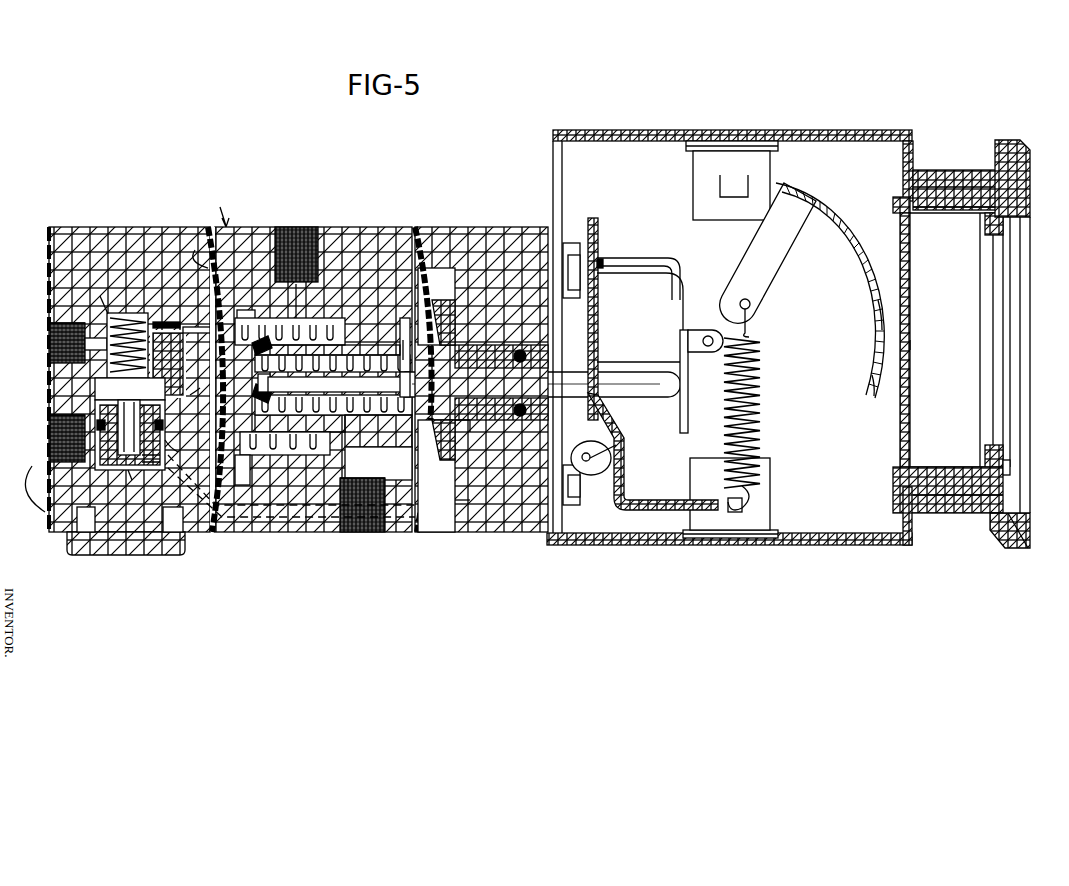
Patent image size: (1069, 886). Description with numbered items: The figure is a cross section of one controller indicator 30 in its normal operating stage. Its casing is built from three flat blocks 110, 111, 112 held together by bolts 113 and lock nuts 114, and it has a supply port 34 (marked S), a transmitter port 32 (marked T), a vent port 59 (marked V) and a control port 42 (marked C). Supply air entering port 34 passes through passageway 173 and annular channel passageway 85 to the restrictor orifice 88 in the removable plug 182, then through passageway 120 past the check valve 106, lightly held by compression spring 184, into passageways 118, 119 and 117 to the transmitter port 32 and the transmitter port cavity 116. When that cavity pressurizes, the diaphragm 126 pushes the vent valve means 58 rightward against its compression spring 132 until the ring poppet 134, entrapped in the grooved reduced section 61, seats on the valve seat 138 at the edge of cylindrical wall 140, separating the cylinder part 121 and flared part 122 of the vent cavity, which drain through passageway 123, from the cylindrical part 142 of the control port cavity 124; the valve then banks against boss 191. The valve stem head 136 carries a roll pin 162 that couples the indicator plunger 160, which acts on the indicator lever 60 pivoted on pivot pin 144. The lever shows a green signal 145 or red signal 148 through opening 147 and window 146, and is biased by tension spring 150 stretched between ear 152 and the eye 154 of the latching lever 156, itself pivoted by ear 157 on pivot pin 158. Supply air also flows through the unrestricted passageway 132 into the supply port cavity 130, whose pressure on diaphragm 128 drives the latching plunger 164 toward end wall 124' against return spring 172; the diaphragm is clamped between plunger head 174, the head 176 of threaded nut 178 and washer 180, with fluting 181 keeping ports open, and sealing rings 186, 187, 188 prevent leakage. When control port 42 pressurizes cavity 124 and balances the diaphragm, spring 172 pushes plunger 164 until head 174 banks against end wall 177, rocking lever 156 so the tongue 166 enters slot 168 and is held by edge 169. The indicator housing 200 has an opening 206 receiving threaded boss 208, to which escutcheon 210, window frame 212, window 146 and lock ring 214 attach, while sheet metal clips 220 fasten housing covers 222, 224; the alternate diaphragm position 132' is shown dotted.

The controller indicator 30 is at (213, 212).
The transmitter port 32 is at (52, 345).
The supply port 34 is at (52, 436).
The control port 42 is at (376, 534).
The vent valve means 58 is at (258, 400).
The vent port 59 is at (315, 220).
The indicator lever 60 is at (872, 300).
The extended reduced section 61 is at (197, 384).
The annular channel passageway 85 is at (152, 462).
The supply restrictor orifice 88 is at (132, 478).
The check valve 106 is at (95, 388).
The block 110 is at (138, 245).
The block 111 is at (358, 245).
The block 112 is at (458, 245).
The bolts 113 is at (49, 290).
The lock nuts 114 is at (563, 268).
The transmitter port cavity 116 is at (196, 372).
The passageway 117 is at (166, 326).
The passageway 118 is at (108, 305).
The passageway 119 is at (90, 338).
The passageway 120 is at (118, 458).
The cylinder part of vent port cavity 121 is at (250, 320).
The flared part of vent port cavity 122 is at (224, 270).
The passageway 123 is at (308, 302).
The control port cavity 124 is at (365, 440).
The end wall of cavity 124' is at (427, 364).
The transmitter port diaphragm 126 is at (189, 249).
The control port diaphragm 128 is at (458, 496).
The supply port cavity 130 is at (445, 474).
The passageway 132 is at (240, 379).
The diaphragm alternate position 132' is at (311, 507).
The ring poppet seal 134 is at (300, 372).
The valve stem head 136 is at (268, 372).
The valve seat 138 is at (268, 430).
The cylindrical wall 140 is at (312, 418).
The cylindrical part of control cavity 142 is at (328, 322).
The pivot pin 144 is at (706, 354).
The safe signal 145 is at (876, 354).
The window 146 is at (952, 300).
The opening 147 is at (908, 346).
The unsafe signal 148 is at (855, 248).
The tension spring 150 is at (760, 398).
The ear 152 is at (736, 294).
The eye 154 is at (726, 504).
The latching lever 156 is at (598, 340).
The ear 157 is at (612, 440).
The pivot pin 158 is at (612, 458).
The indicator plunger 160 is at (650, 366).
The roll pin 162 is at (412, 385).
The latching plunger 164 is at (502, 348).
The tongue 166 is at (654, 254).
The slot 168 is at (600, 272).
The edge of slot 169 is at (598, 236).
The return spring 172 is at (345, 350).
The passageway 173 is at (49, 472).
The plunger head 174 is at (460, 312).
The nut head 176 is at (378, 463).
The end wall of cavity 177 is at (450, 466).
The externally threaded nut 178 is at (456, 425).
The washer 180 is at (405, 320).
The grooves or fluting 181 is at (400, 340).
The removable plug 182 is at (140, 545).
The compression spring 184 is at (122, 318).
The sealing ring 186 is at (187, 453).
The ring seal 187 is at (464, 348).
The ring seal 188 is at (522, 421).
The boss 191 is at (236, 465).
The indicator housing 200 is at (731, 342).
The opening 206 is at (898, 512).
The threaded boss 208 is at (962, 512).
The escutcheon 210 is at (1010, 544).
The window frame 212 is at (910, 446).
The lock ring 214 is at (1010, 470).
The sheet metal clips 220 is at (772, 172).
The housing cover 222 is at (822, 130).
The housing cover 224 is at (812, 548).
The tank connection T is at (52, 338).
The supply connection S is at (52, 428).
The vent plug V is at (284, 240).
The control plug C is at (352, 534).